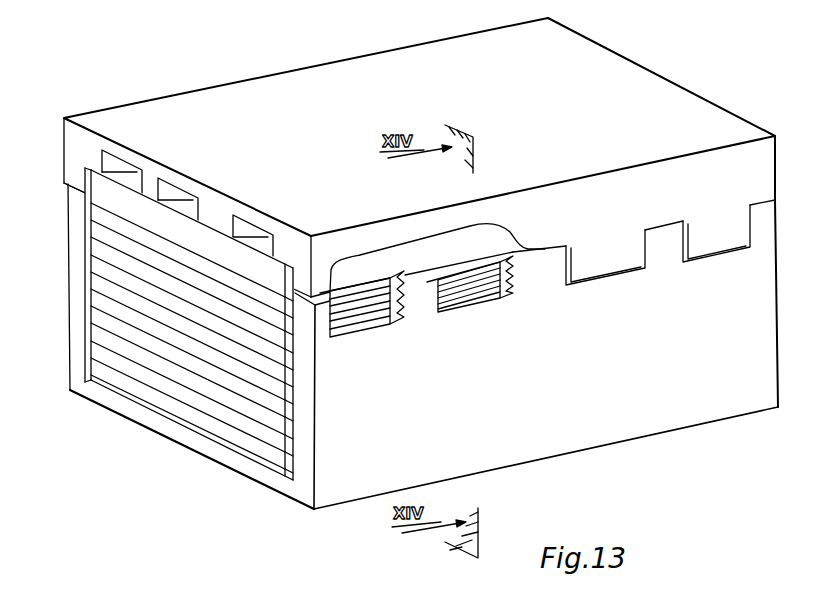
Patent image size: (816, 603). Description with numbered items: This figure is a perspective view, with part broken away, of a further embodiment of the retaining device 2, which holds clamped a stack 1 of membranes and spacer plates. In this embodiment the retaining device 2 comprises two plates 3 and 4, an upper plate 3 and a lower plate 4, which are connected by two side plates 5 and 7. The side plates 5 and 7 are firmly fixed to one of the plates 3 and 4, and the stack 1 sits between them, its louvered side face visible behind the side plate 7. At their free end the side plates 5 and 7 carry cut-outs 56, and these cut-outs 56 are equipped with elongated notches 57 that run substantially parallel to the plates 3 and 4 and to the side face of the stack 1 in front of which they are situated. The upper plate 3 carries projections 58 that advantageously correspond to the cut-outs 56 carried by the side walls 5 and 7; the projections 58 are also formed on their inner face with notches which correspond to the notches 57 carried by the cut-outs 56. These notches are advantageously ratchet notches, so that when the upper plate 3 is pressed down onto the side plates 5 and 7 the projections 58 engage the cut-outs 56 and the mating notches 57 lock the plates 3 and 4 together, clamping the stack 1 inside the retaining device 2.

The stack 1 is at (177, 323).
The retaining device 2 is at (346, 57).
The upper plate 3 is at (227, 127).
The plate 4 is at (223, 453).
The side plate 5 is at (303, 410).
The side plate 7 is at (80, 293).
The cut-outs 56 is at (458, 309).
The elongated notches 57 is at (494, 281).
The projections 58 is at (605, 252).